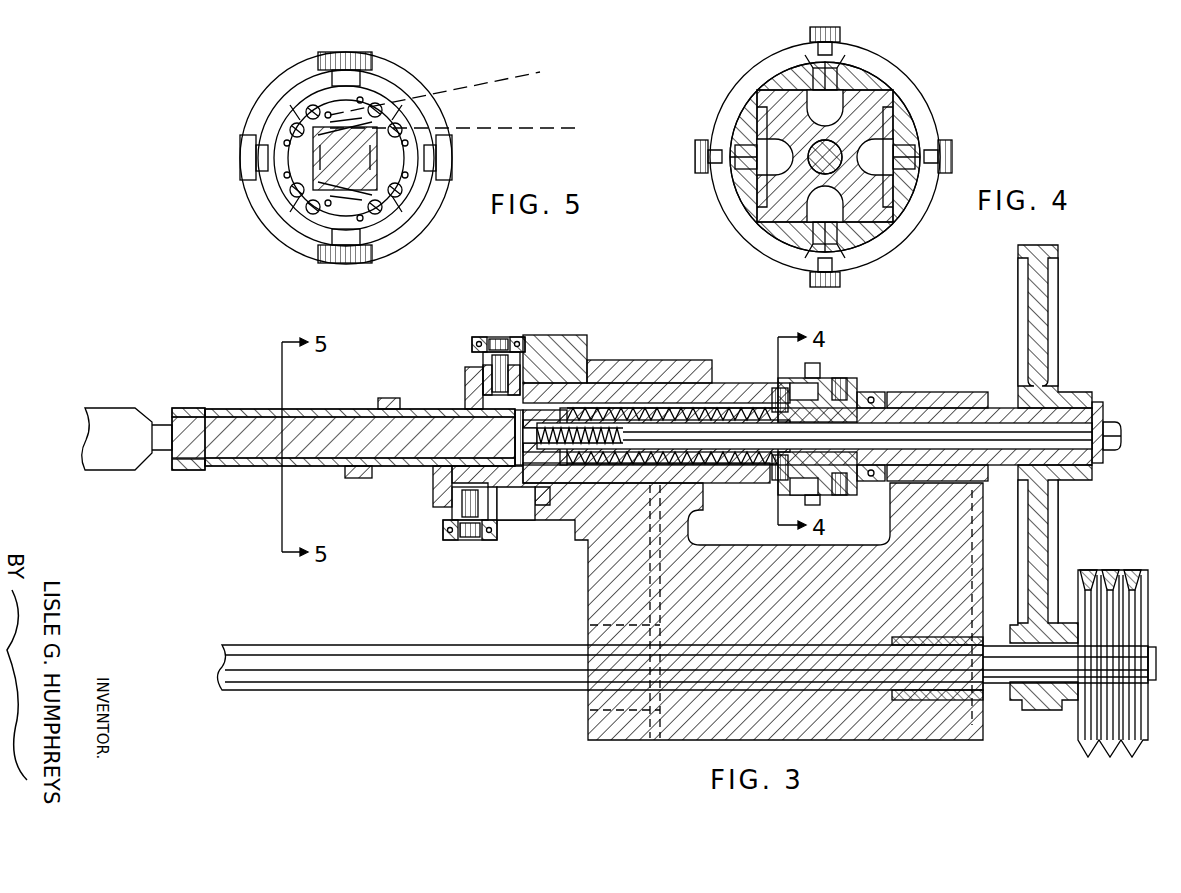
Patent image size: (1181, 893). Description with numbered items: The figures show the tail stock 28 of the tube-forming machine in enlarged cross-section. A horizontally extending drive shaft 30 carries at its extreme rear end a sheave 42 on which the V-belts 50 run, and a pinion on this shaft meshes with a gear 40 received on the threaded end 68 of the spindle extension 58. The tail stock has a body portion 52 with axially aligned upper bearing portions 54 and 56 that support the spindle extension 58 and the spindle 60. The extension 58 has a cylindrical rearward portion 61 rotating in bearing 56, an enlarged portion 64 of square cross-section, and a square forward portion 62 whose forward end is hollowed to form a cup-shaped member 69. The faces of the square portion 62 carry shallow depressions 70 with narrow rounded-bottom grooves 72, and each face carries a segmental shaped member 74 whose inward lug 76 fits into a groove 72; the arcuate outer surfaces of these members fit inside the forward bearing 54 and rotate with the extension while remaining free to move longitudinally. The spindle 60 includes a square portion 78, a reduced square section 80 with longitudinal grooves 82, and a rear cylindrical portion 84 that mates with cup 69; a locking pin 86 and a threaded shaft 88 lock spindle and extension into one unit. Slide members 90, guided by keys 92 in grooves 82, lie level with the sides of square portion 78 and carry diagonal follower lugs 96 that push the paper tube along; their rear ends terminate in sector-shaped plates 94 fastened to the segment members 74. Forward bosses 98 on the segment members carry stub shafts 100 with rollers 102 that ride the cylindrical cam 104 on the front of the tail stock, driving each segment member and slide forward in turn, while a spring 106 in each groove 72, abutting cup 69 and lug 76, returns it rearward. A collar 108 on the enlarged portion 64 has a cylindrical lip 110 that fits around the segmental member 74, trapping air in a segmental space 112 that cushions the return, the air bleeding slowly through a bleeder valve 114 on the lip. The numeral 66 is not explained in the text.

In FIG. 3, the tail stock 28 is at (727, 352).
In FIG. 3, the drive shaft 30 is at (345, 648).
In FIG. 3, the gear 40 is at (1058, 256).
In FIG. 3, the sheave 42 is at (1148, 600).
In FIG. 3, the V-belts 50 is at (1110, 570).
In FIG. 3, the body portion 52 is at (600, 570).
In FIG. 3, the upper bearing portion 54 is at (635, 360).
In FIG. 3, the upper bearing portion 56 is at (938, 392).
In FIG. 3, the spindle extension 58 is at (1082, 430).
In FIG. 3, the spindle 60 is at (82, 436).
In FIG. 3, the cylindrical rearward portion 61 is at (965, 410).
In FIG. 4, the square forward portion 62 is at (878, 128).
In FIG. 3, the enlarged portion 64 is at (900, 425).
In FIG. 3, the shaft end portion 66 is at (1060, 408).
In FIG. 3, the threaded end 68 is at (1118, 428).
In FIG. 3, the cup-shaped member 69 is at (596, 362).
In FIG. 4, the shallow depressions 70 is at (872, 105).
In FIG. 3, the grooves 72 is at (762, 380).
In FIG. 4, the grooves 72 is at (860, 80).
In FIG. 3, the segmental shaped member 74 is at (788, 390).
In FIG. 4, the segmental shaped member 74 is at (812, 90).
In FIG. 3, the lug 76 is at (760, 462).
In FIG. 4, the lug 76 is at (790, 108).
In FIG. 3, the square portion 78 is at (110, 408).
In FIG. 3, the reduced square section 80 is at (185, 409).
In FIG. 3, the longitudinal grooves 82 is at (185, 462).
In FIG. 5, the longitudinal grooves 82 is at (382, 192).
In FIG. 3, the rear cylindrical portion 84 is at (590, 365).
In FIG. 3, the locking pin 86 is at (532, 345).
In FIG. 3, the threaded shaft 88 is at (1100, 402).
In FIG. 3, the slide members 90 is at (298, 409).
In FIG. 5, the slide members 90 is at (372, 147).
In FIG. 5, the longitudinal keys 92 is at (385, 170).
In FIG. 3, the sector-shaped plates 94 is at (470, 395).
In FIG. 5, the sector-shaped plates 94 is at (385, 208).
In FIG. 3, the follower lugs 96 is at (384, 398).
In FIG. 5, the follower lugs 96 is at (282, 196).
In FIG. 3, the cylindrical bosses 98 is at (470, 367).
In FIG. 3, the stub shafts 100 is at (483, 378).
In FIG. 5, the stub shafts 100 is at (366, 80).
In FIG. 3, the rollers 102 is at (495, 337).
In FIG. 5, the rollers 102 is at (368, 58).
In FIG. 3, the cylindrical cam 104 is at (520, 410).
In FIG. 5, the cylindrical cam 104 is at (298, 240).
In FIG. 3, the spring 106 is at (688, 385).
In FIG. 3, the collar 108 is at (871, 392).
In FIG. 3, the cylindrical lip 110 is at (838, 378).
In FIG. 4, the cylindrical lip 110 is at (920, 125).
In FIG. 3, the segmental space 112 is at (885, 400).
In FIG. 3, the bleeder valve 114 is at (815, 363).
In FIG. 4, the bleeder valve 114 is at (948, 160).